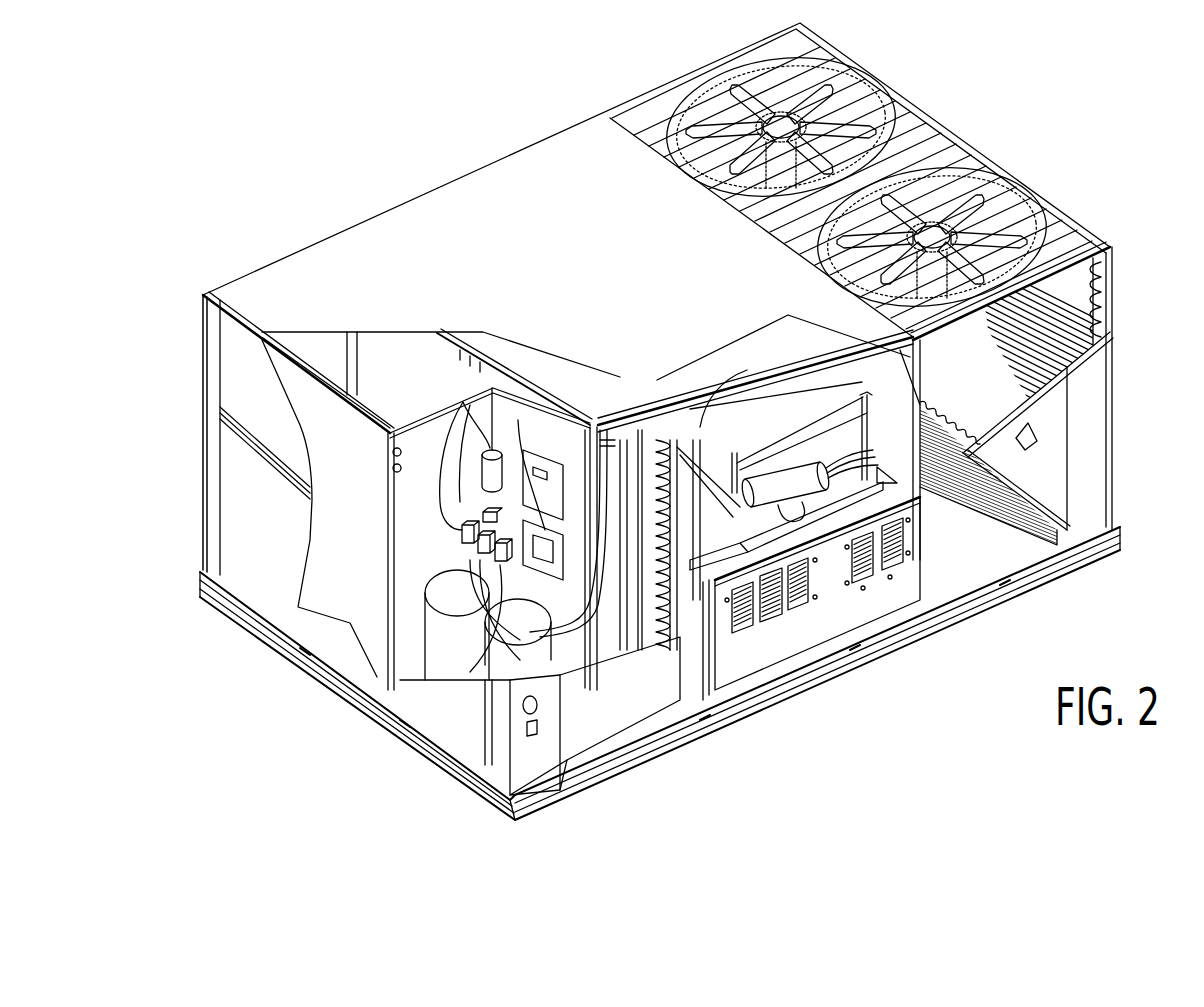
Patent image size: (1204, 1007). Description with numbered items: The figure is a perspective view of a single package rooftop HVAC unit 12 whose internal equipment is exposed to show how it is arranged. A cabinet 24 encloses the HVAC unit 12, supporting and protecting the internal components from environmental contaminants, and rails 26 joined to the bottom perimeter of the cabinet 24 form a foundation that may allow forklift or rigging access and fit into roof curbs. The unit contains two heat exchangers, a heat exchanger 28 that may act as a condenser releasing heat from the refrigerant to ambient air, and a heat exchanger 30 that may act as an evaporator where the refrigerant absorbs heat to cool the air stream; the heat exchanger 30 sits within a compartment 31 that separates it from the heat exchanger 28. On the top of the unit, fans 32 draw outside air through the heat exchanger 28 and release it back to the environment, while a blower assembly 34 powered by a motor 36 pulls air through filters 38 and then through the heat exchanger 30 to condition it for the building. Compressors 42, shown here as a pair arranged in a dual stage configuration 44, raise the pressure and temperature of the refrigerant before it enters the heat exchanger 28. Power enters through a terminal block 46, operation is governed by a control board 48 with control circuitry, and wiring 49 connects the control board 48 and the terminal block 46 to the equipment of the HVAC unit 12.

The HVAC unit 12 is at (380, 123).
The cabinet 24 is at (245, 542).
The rails 26 is at (263, 640).
The heat exchanger 28 is at (1104, 303).
The heat exchanger 30 is at (667, 643).
The compartment 31 is at (673, 473).
The fans 32 is at (973, 158).
The blower assembly 34 is at (850, 433).
The motor 36 is at (788, 485).
The filters 38 is at (620, 465).
The compressors 42 is at (430, 620).
The dual stage configuration 44 is at (420, 575).
The terminal block 46 is at (495, 518).
The control board 48 is at (547, 530).
The wiring 49 is at (634, 447).